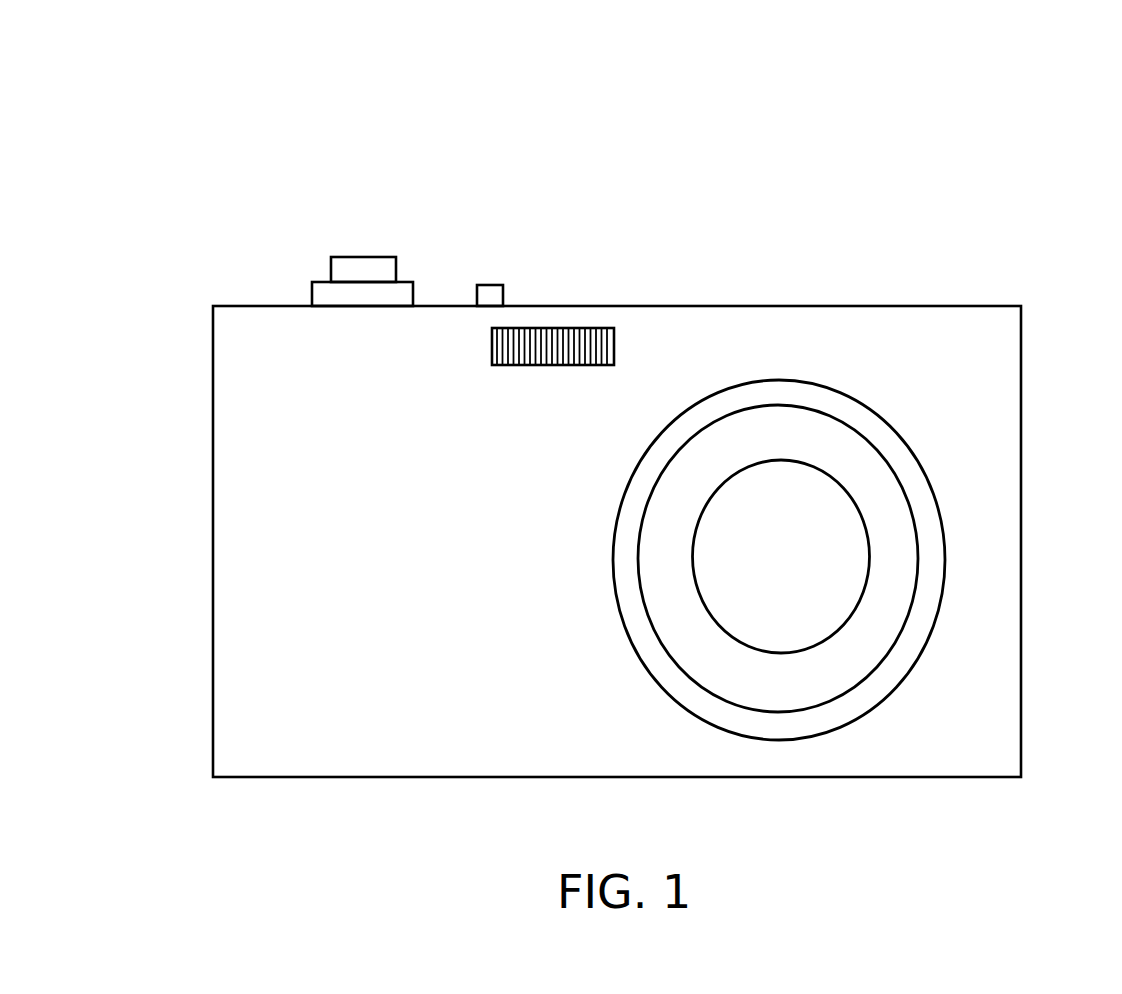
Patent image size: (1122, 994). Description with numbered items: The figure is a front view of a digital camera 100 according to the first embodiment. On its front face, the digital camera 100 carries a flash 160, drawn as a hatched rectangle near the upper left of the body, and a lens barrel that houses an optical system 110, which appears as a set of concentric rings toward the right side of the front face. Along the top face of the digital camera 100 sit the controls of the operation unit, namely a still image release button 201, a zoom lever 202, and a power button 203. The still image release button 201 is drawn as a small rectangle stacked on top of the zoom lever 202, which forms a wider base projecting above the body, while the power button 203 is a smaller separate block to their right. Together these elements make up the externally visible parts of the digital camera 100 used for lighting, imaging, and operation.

The digital camera 100 is at (228, 128).
The optical system 110 is at (823, 579).
The flash 160 is at (563, 350).
The still image release button 201 is at (352, 270).
The zoom lever 202 is at (402, 292).
The power button 203 is at (491, 296).